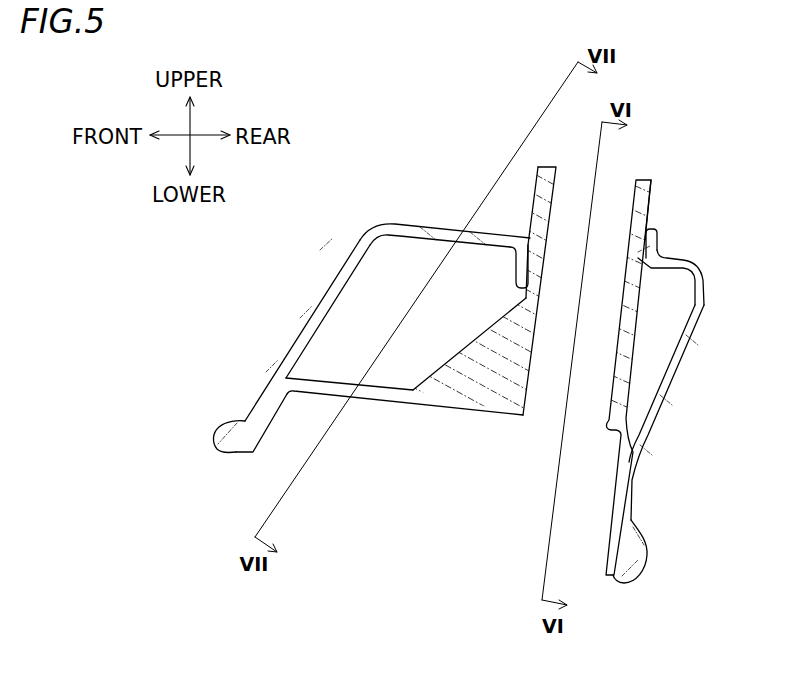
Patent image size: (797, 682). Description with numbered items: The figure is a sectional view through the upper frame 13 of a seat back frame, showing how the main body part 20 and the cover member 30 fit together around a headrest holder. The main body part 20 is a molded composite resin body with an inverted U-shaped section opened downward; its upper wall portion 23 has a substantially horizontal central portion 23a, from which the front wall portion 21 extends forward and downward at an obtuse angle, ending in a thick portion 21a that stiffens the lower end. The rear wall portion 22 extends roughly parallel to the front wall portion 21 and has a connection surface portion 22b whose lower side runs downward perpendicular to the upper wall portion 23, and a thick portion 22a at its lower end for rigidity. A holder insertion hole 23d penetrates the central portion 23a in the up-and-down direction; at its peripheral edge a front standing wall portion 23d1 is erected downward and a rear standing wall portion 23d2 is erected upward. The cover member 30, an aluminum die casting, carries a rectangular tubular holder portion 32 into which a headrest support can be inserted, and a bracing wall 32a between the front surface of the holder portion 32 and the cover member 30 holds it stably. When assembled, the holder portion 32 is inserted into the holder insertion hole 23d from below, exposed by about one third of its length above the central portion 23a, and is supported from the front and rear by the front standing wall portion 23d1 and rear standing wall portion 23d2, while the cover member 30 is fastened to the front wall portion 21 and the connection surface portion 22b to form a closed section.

The upper frame 13 is at (433, 274).
The main body part 20 is at (503, 227).
The cover member 30 is at (378, 400).
The front wall portion 21 is at (313, 312).
The thick portion 21a is at (226, 449).
The upper wall portion 23 is at (445, 173).
The central portion 23a is at (450, 226).
The holder insertion hole 23d is at (628, 248).
The front standing wall portion 23d1 is at (513, 268).
The rear standing wall portion 23d2 is at (654, 238).
The holder portion 32 is at (649, 200).
The bracing wall 32a is at (478, 337).
The rear wall portion 22 is at (699, 416).
The thick portion 22a is at (632, 563).
The connection surface portion 22b is at (636, 481).